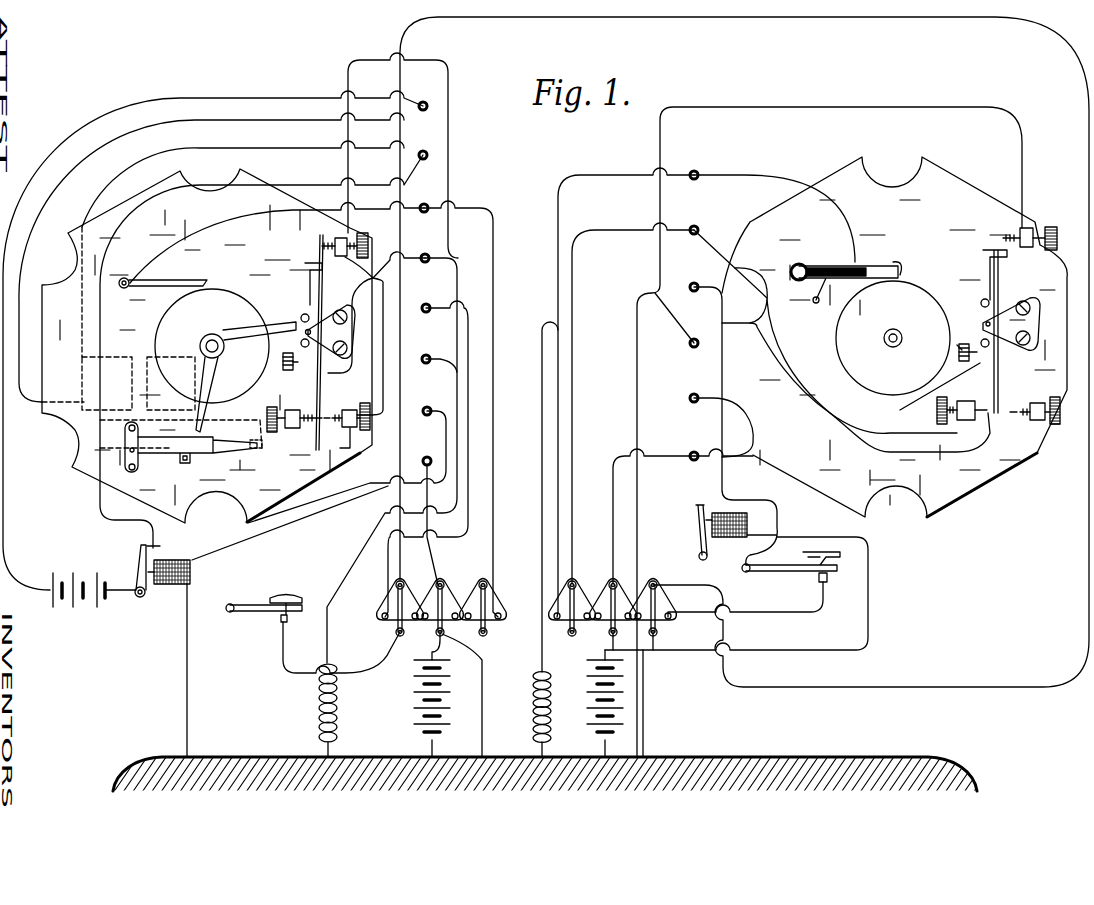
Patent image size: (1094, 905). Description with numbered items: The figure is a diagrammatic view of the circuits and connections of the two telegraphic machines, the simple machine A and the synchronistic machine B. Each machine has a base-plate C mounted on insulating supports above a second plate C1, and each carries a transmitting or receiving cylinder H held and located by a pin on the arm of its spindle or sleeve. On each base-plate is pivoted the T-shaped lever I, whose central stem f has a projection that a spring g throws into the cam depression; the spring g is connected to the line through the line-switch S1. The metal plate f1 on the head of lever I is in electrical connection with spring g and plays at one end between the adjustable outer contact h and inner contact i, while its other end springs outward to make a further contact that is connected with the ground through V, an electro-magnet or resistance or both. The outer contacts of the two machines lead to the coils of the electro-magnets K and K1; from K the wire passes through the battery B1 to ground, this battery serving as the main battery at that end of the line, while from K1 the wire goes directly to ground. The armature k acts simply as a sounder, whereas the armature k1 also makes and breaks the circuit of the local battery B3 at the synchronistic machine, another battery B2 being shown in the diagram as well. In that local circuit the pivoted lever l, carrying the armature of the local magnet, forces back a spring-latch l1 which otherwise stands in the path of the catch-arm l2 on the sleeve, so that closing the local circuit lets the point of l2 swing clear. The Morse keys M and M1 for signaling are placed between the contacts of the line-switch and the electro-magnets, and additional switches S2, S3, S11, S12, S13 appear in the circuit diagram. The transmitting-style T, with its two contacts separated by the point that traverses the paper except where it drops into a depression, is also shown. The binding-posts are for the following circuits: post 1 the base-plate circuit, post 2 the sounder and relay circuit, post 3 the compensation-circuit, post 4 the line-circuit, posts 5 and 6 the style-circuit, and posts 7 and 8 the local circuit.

The binding-post 1 is at (563, 451).
The binding-post 2 is at (563, 397).
The binding-post 3 is at (562, 343).
The binding-post 4 is at (561, 290).
The binding-post 5 is at (560, 236).
The binding-post 6 is at (560, 184).
The binding-post 7 is at (430, 140).
The binding-post 8 is at (423, 99).
The simple machine A is at (904, 337).
The synchronistic machine B is at (195, 346).
The base-plate C is at (90, 470).
The lower plate C1 is at (982, 485).
The cylinder H is at (552, 342).
The T-shaped lever I is at (661, 342).
The transmitting-style T is at (860, 264).
The central stem f is at (338, 238).
The metal plate f1 is at (645, 375).
The spring g is at (629, 368).
The outer contact h is at (296, 432).
The inner contact i is at (345, 430).
The pivoted lever l is at (252, 450).
The spring-latch l1 is at (168, 375).
The catch-arm l2 is at (246, 377).
The electro-magnet K is at (729, 535).
The armature k is at (698, 520).
The Morse key M is at (791, 574).
The electro-magnet K1 is at (172, 584).
The armature k1 is at (136, 568).
The Morse key M1 is at (264, 602).
The battery B1 is at (593, 696).
The battery B2 is at (417, 696).
The local battery B3 is at (94, 584).
The electro-magnet or resistance V is at (421, 703).
The line-switch S1 is at (396, 632).
The switch S2 is at (487, 633).
The switch S3 is at (440, 617).
The switch S11 is at (657, 635).
The switch S12 is at (568, 632).
The switch S13 is at (610, 616).